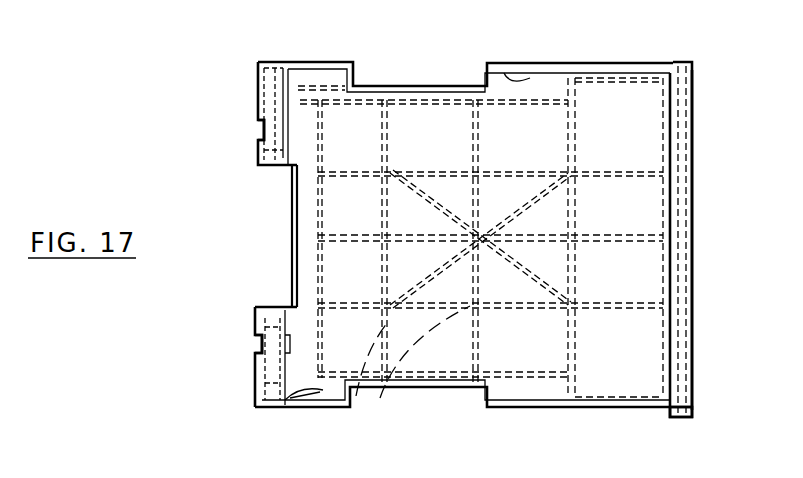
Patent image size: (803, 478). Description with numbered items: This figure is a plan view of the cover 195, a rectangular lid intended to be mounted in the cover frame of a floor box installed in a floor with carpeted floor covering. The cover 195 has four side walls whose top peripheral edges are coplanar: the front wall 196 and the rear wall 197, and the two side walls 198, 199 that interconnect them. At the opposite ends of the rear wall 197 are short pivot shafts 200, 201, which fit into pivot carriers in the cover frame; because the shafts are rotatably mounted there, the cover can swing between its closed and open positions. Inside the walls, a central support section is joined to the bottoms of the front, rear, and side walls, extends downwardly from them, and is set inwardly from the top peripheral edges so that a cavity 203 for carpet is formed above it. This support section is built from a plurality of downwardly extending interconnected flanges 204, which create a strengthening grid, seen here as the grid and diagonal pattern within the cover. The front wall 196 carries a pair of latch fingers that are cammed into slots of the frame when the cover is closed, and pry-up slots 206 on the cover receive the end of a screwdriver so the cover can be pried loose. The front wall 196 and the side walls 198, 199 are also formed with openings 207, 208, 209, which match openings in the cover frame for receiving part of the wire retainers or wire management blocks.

The cover 195 is at (252, 160).
The front wall 196 is at (258, 325).
The rear wall 197 is at (693, 338).
The side wall 198 is at (574, 64).
The side wall 199 is at (567, 408).
The pivot shaft 200 is at (691, 62).
The pivot shaft 201 is at (693, 415).
The cavity 203 is at (518, 78).
The flanges 204 is at (379, 398).
The pry-up slots 206 is at (258, 128).
The opening 207 is at (278, 172).
The opening 208 is at (362, 72).
The opening 209 is at (385, 402).